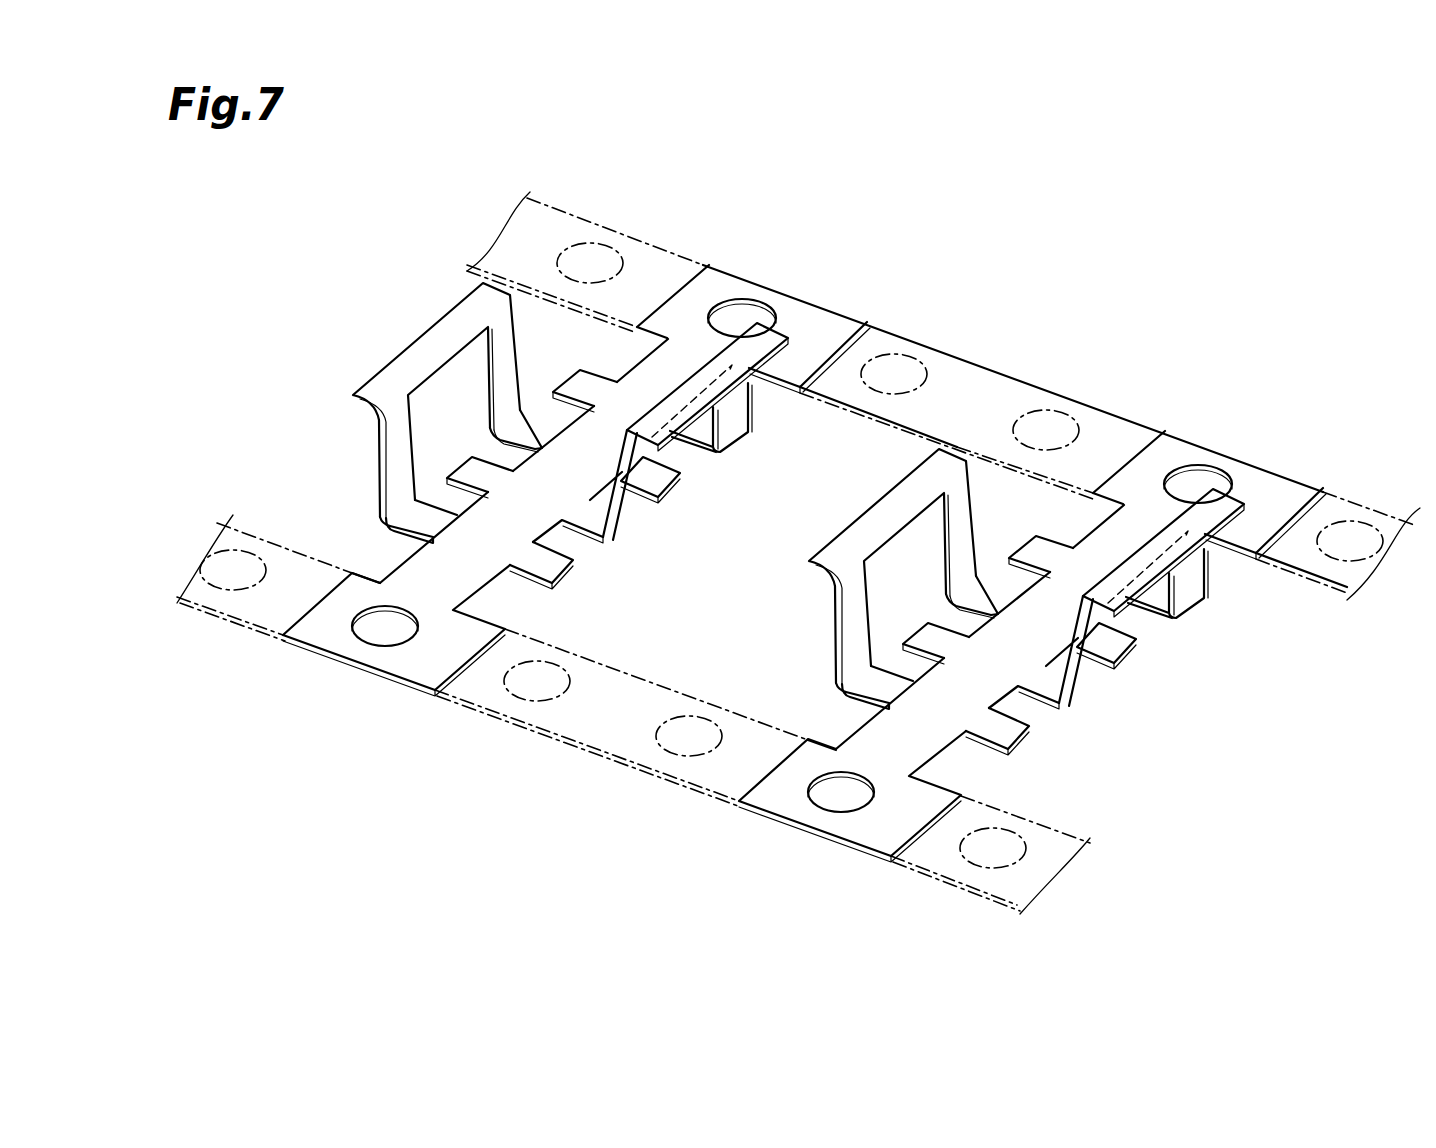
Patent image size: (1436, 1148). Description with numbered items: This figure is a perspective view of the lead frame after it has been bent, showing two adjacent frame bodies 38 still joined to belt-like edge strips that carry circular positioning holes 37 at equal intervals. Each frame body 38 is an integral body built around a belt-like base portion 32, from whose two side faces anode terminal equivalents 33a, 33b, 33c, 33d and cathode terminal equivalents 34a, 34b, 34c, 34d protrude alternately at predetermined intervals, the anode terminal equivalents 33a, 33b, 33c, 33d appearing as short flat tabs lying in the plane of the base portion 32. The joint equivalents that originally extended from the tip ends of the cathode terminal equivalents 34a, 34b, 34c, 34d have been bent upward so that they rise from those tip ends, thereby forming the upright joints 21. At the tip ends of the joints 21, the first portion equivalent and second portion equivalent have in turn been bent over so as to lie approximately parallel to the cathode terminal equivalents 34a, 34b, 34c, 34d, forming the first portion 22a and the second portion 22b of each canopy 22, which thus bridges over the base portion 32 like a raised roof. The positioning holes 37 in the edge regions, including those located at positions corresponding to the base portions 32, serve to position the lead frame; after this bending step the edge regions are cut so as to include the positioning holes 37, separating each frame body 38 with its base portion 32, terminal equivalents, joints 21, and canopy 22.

The frame body 38 is at (418, 252).
The joint 21 is at (505, 357).
The canopy 22 is at (808, 468).
The first portion 22a is at (775, 337).
The second portion 22b is at (398, 370).
The base portion 32 is at (657, 373).
The positioning hole 37 is at (748, 314).
The anode terminal equivalent 33a is at (555, 562).
The anode terminal equivalent 33b is at (657, 480).
The anode terminal equivalent 33c is at (470, 470).
The anode terminal equivalent 33d is at (593, 380).
The cathode terminal equivalent 34a is at (593, 523).
The cathode terminal equivalent 34b is at (690, 435).
The cathode terminal equivalent 34c is at (423, 520).
The cathode terminal equivalent 34d is at (522, 430).